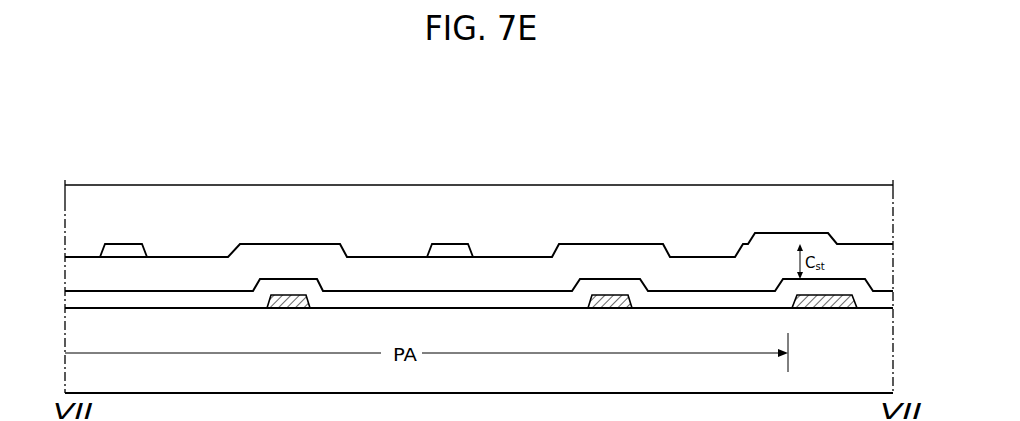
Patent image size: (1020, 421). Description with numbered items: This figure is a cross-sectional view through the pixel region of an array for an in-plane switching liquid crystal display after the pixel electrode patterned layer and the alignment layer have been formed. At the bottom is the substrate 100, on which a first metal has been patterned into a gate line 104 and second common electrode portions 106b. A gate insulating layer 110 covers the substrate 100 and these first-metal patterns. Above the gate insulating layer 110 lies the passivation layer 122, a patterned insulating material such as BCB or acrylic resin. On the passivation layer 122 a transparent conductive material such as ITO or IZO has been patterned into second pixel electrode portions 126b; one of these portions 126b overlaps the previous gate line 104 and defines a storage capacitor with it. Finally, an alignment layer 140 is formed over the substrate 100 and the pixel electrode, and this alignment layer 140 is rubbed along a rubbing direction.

The substrate 100 is at (863, 376).
The gate line 104 is at (840, 295).
The second common electrode portion 106b is at (287, 295).
The gate insulating layer 110 is at (533, 291).
The passivation layer 122 is at (690, 257).
The second pixel electrode portion 126b is at (127, 244).
The alignment layer 140 is at (197, 200).